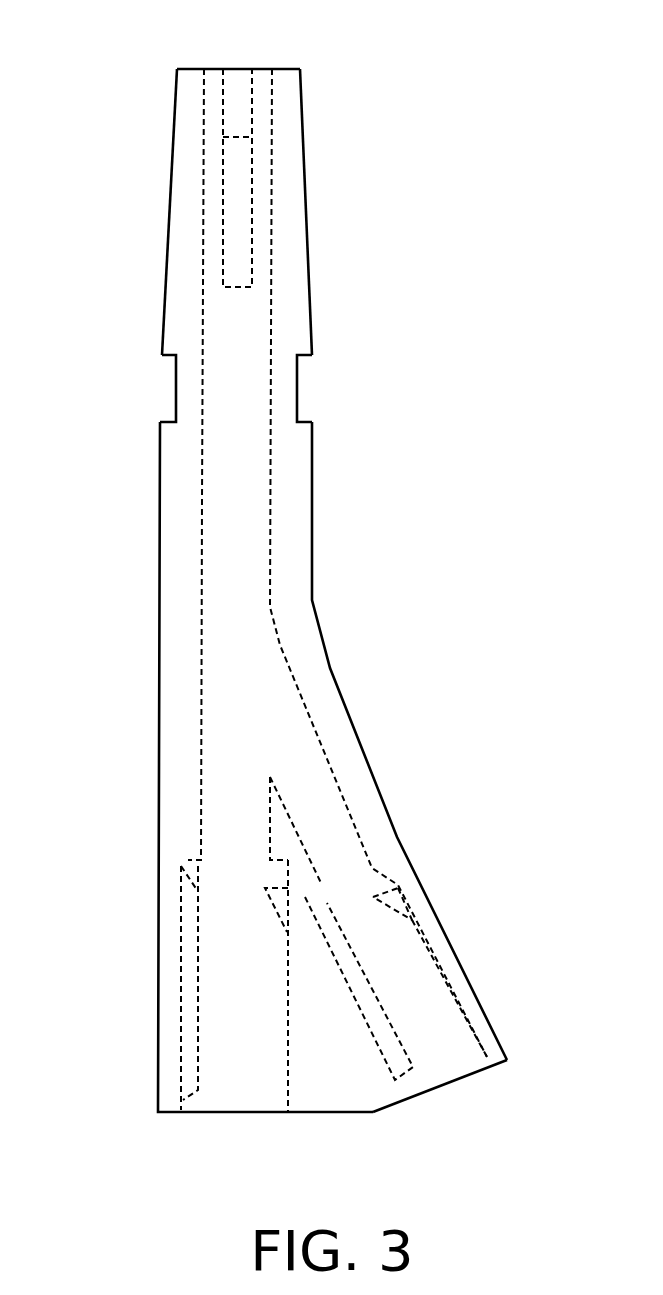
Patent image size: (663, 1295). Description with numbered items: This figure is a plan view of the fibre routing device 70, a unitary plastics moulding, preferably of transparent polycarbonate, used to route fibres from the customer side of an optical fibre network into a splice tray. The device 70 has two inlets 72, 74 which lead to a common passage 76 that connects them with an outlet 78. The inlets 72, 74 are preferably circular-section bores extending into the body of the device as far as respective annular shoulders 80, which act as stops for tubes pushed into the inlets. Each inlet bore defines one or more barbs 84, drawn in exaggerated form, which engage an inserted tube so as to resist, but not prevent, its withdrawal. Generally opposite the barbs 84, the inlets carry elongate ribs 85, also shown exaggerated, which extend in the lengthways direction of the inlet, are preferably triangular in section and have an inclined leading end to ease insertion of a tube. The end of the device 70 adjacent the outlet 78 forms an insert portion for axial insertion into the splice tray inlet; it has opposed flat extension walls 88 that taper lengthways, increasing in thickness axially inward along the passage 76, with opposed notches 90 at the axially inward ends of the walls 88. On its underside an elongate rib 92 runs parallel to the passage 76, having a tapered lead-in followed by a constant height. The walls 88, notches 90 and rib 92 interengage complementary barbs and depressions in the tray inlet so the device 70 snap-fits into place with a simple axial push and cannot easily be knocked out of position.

The fibre routing device 70 is at (92, 746).
The inlet 72 is at (266, 1114).
The inlet 74 is at (458, 1086).
The common passage 76 is at (210, 603).
The outlet 78 is at (240, 68).
The annular shoulder 80 is at (186, 861).
The barb 84 is at (274, 900).
The elongate rib 85 is at (196, 1116).
The flat extension wall 88 is at (165, 278).
The notch 90 is at (176, 389).
The elongate rib 92 is at (222, 171).